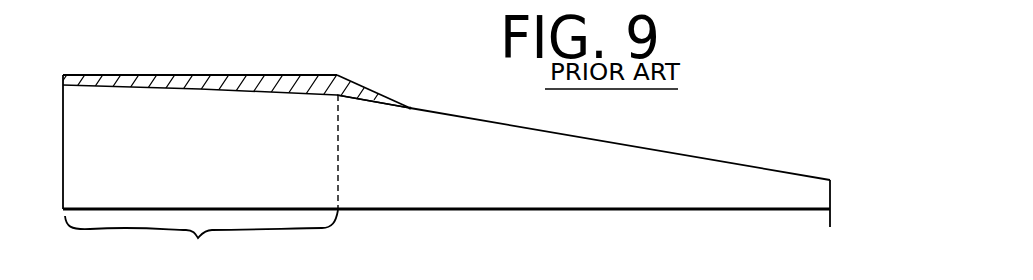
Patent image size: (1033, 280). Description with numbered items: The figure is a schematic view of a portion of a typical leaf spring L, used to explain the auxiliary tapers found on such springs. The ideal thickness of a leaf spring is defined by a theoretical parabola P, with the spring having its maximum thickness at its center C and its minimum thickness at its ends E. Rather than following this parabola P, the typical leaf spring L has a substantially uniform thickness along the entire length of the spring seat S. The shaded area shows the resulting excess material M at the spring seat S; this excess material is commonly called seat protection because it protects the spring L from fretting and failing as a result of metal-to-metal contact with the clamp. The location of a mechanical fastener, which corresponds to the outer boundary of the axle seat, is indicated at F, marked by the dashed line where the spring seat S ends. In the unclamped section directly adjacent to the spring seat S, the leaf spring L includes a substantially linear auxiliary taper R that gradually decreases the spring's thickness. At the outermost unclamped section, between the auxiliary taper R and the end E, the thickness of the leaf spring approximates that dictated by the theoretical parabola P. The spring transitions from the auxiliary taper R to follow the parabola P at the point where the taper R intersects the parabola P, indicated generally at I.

The center C is at (63, 73).
The leaf spring L is at (128, 65).
The excess material M is at (300, 73).
The auxiliary taper R is at (392, 99).
The intersection point I is at (411, 107).
The parabola P is at (552, 128).
The end E is at (830, 227).
The mechanical fastener location F is at (338, 210).
The spring seat S is at (201, 237).